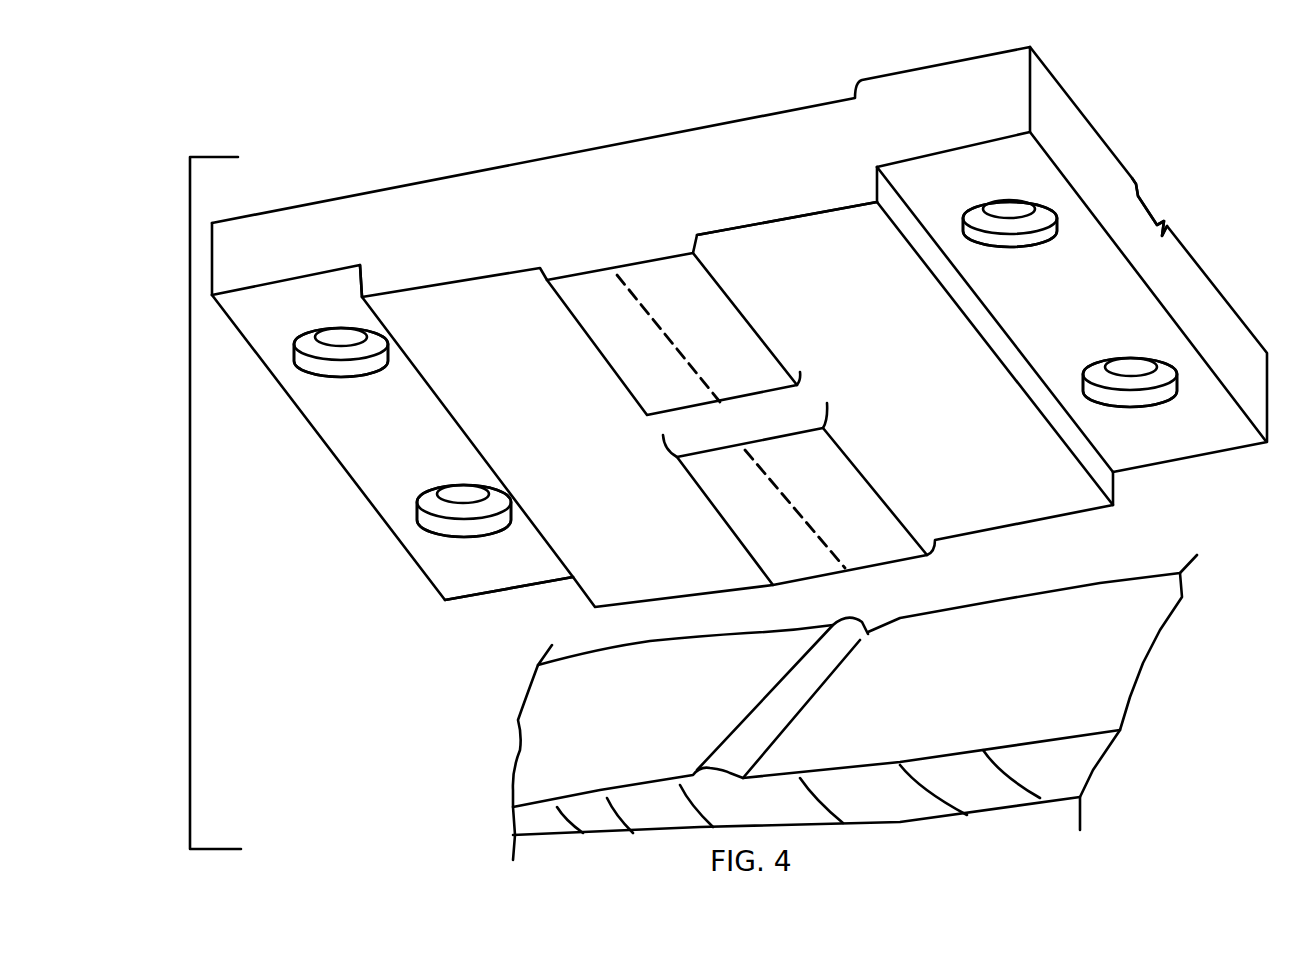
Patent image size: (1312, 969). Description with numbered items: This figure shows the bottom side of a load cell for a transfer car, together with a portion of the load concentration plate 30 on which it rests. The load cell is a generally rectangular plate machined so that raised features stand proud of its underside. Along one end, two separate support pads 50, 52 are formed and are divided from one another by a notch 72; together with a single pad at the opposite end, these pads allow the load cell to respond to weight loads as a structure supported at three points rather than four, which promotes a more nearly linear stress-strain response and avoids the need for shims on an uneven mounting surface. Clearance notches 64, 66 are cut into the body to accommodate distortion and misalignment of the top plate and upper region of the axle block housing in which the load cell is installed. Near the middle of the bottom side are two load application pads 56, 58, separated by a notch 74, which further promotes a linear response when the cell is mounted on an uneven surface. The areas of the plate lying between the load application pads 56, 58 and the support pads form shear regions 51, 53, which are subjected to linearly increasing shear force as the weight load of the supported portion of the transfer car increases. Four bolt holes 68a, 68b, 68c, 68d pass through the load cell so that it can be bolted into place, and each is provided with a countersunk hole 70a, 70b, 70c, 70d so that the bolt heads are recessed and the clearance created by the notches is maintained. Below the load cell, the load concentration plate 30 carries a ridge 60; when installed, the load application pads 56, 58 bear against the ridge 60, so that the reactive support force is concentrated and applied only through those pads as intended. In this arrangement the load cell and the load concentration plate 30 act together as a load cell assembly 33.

The support pad 50 is at (1072, 93).
The support pad 52 is at (1215, 280).
The notch 72 is at (1147, 212).
The clearance notch 64 is at (873, 177).
The clearance notch 66 is at (365, 270).
The shear region 51 is at (862, 303).
The shear region 53 is at (512, 367).
The load application pad 58 is at (623, 263).
The load application pad 56 is at (815, 583).
The notch 74 is at (810, 392).
The bolt hole 68a is at (985, 212).
The bolt hole 68b is at (318, 343).
The bolt hole 68c is at (1105, 371).
The bolt hole 68d is at (438, 501).
The countersunk hole 70a is at (1008, 244).
The countersunk hole 70b is at (328, 376).
The countersunk hole 70c is at (1134, 406).
The countersunk hole 70d is at (455, 532).
The load concentration plate 30 is at (477, 751).
The ridge 60 is at (743, 722).
The load cell assembly 33 is at (184, 410).